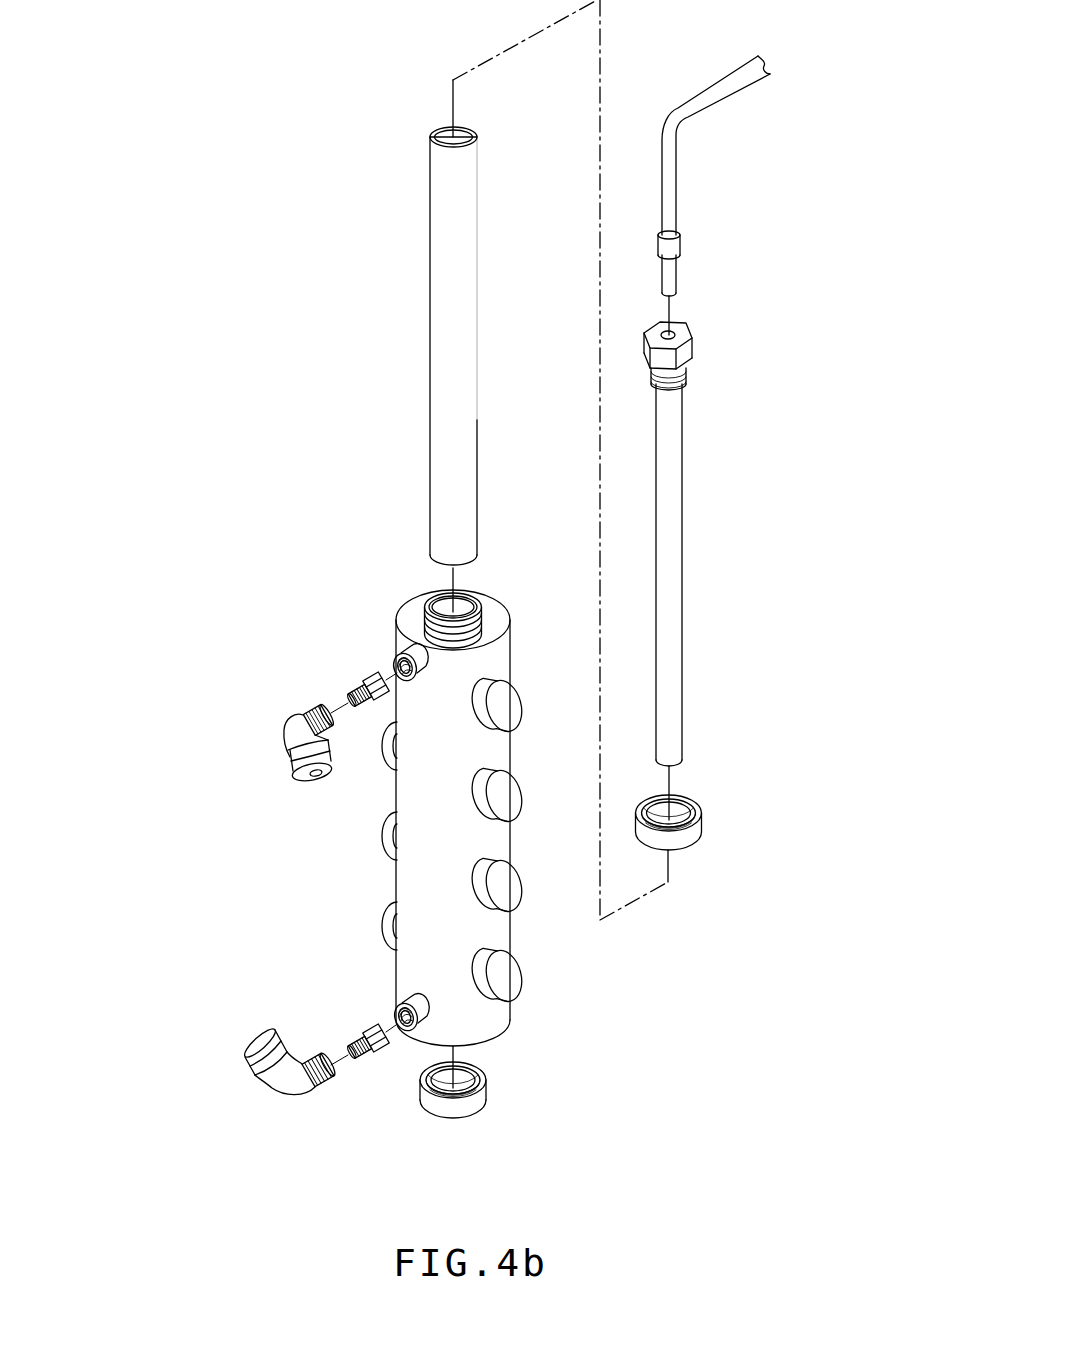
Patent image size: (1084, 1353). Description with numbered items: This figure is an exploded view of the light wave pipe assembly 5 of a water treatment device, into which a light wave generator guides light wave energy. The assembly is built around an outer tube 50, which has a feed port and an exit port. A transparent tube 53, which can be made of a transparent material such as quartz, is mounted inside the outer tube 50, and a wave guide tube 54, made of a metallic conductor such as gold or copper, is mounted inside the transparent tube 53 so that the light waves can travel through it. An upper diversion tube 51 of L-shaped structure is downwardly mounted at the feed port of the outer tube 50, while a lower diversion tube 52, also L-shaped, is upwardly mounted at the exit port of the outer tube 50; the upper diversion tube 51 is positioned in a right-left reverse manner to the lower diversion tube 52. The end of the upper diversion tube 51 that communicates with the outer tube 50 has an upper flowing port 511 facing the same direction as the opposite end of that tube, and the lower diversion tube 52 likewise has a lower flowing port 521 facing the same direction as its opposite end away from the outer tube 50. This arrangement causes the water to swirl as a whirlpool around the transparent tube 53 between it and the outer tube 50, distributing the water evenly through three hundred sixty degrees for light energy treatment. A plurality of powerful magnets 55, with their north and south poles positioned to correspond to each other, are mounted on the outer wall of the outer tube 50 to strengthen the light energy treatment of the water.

The light wave pipe assembly 5 is at (339, 295).
The outer tube 50 is at (498, 656).
The upper diversion tube 51 is at (287, 731).
The upper flowing port 511 is at (370, 674).
The lower diversion tube 52 is at (290, 1086).
The lower flowing port 521 is at (373, 1027).
The transparent tube 53 is at (465, 369).
The wave guide tube 54 is at (676, 536).
The powerful magnets 55 is at (509, 715).